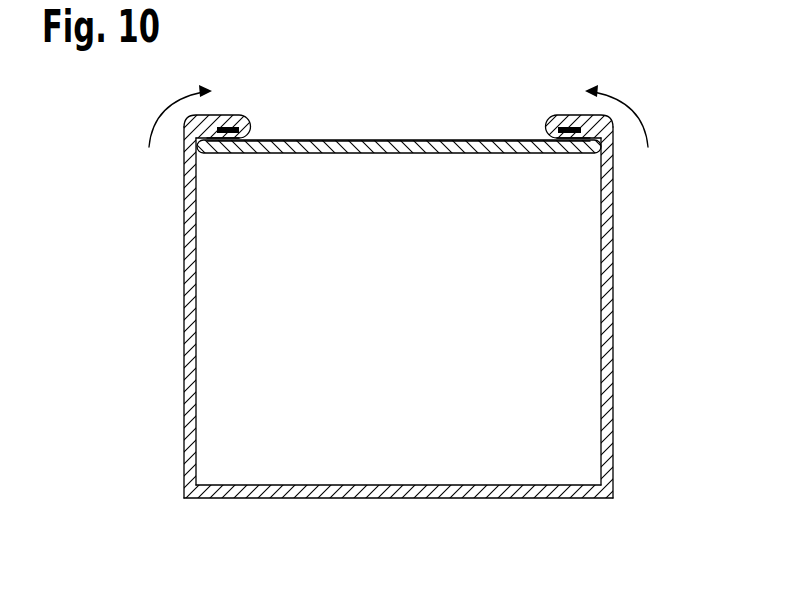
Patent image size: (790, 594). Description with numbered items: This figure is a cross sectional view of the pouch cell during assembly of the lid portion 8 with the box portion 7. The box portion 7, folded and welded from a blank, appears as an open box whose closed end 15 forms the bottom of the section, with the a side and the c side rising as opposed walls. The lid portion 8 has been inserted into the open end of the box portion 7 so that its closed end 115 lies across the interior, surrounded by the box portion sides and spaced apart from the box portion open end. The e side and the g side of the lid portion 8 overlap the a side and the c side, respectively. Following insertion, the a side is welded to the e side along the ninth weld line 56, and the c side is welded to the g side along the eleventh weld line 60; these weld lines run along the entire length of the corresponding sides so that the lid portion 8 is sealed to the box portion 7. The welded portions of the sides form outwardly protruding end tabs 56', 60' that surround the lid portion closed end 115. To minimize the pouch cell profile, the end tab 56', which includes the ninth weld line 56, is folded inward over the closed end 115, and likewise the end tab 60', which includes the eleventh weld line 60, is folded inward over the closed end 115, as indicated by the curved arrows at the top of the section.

The box portion 7 is at (613, 322).
The a side a is at (192, 275).
The c side c is at (613, 275).
The closed end 15 is at (433, 500).
The end tab 56' is at (240, 97).
The end tab 60' is at (558, 97).
The ninth weld line 56 is at (271, 111).
The eleventh weld line 60 is at (524, 111).
The lid portion 8 is at (362, 140).
The closed end 115 is at (418, 140).
The e side e is at (232, 134).
The g side g is at (562, 134).